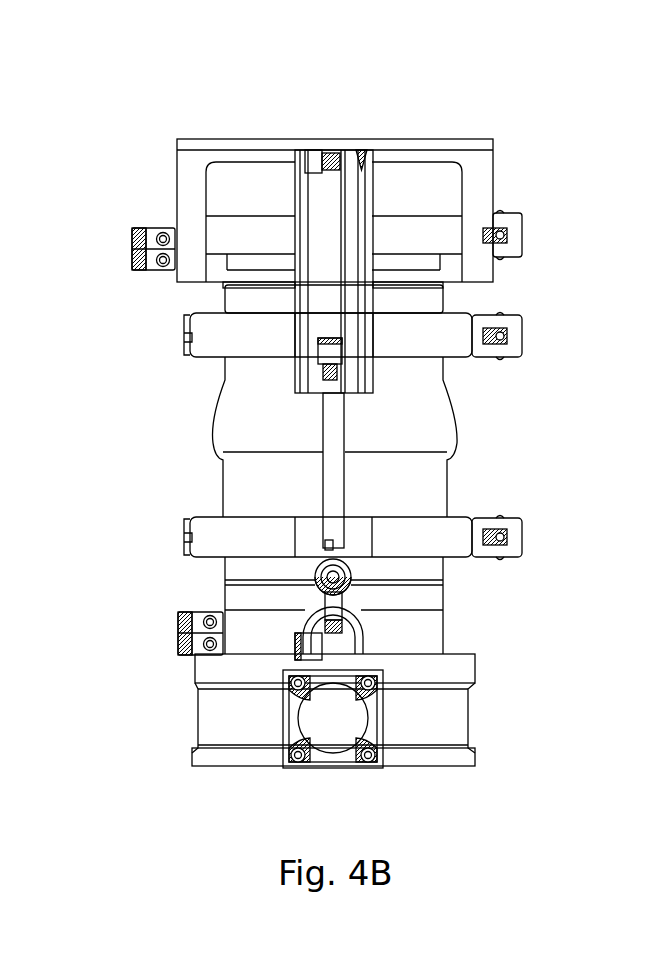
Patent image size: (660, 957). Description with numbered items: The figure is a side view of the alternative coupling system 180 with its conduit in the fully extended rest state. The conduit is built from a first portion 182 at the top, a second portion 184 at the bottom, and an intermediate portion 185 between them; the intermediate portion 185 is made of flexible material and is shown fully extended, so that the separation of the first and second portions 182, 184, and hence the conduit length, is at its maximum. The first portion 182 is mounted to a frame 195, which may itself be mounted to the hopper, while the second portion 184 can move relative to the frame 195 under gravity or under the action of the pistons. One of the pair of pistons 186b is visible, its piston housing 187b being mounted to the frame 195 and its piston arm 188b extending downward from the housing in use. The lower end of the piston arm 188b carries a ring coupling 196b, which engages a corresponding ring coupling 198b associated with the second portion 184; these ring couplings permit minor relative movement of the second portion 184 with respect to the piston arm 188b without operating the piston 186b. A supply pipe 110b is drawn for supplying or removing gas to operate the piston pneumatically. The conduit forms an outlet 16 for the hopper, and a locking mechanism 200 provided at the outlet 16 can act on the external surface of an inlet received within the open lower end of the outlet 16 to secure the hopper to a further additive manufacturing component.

The coupling system 180 is at (552, 326).
The first portion 182 is at (443, 216).
The second portion 184 is at (472, 718).
The intermediate portion 185 is at (445, 390).
The piston 186b is at (368, 156).
The piston housing 187b is at (300, 205).
The piston arm 188b is at (322, 487).
The frame 195 is at (178, 168).
The coupling 196b is at (347, 600).
The coupling 198b is at (365, 633).
The supply pipe 110b is at (305, 647).
The locking mechanism 200 is at (402, 784).
The outlet 16 is at (215, 765).